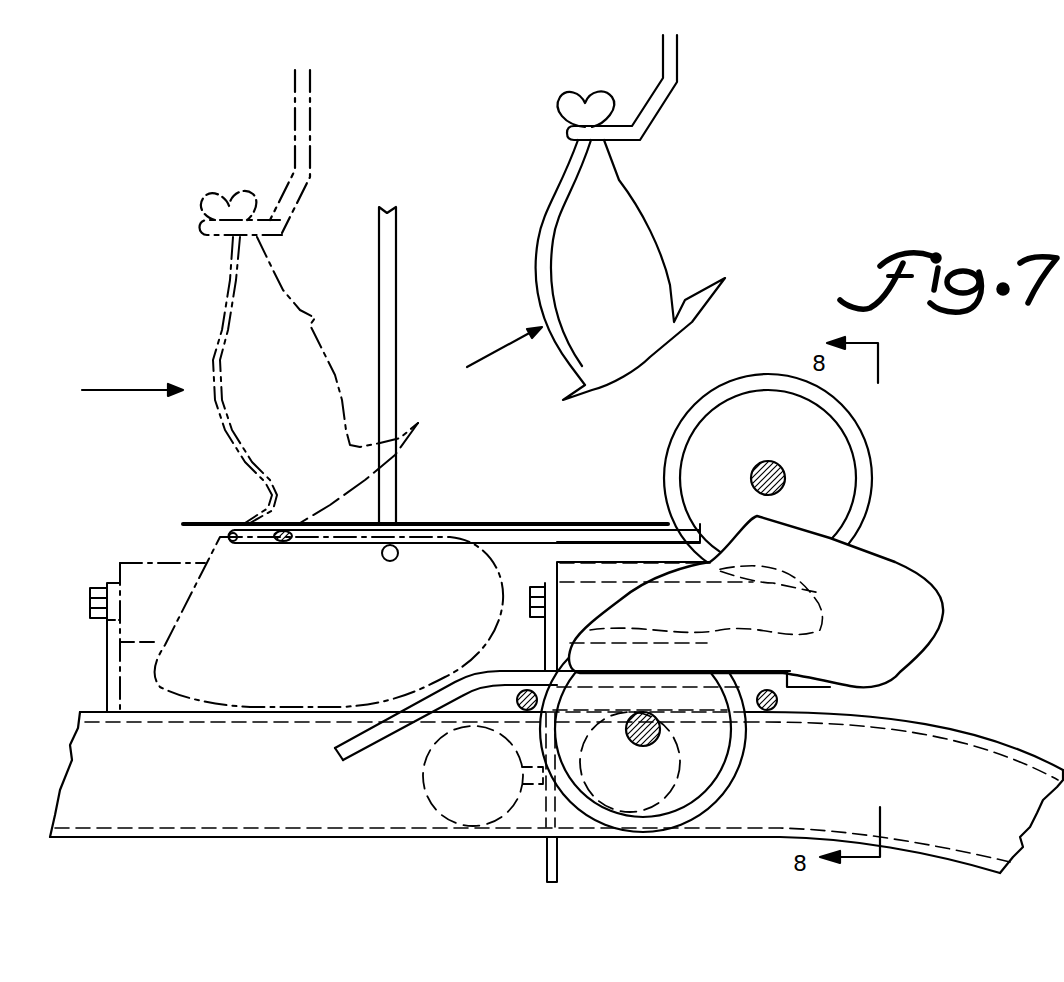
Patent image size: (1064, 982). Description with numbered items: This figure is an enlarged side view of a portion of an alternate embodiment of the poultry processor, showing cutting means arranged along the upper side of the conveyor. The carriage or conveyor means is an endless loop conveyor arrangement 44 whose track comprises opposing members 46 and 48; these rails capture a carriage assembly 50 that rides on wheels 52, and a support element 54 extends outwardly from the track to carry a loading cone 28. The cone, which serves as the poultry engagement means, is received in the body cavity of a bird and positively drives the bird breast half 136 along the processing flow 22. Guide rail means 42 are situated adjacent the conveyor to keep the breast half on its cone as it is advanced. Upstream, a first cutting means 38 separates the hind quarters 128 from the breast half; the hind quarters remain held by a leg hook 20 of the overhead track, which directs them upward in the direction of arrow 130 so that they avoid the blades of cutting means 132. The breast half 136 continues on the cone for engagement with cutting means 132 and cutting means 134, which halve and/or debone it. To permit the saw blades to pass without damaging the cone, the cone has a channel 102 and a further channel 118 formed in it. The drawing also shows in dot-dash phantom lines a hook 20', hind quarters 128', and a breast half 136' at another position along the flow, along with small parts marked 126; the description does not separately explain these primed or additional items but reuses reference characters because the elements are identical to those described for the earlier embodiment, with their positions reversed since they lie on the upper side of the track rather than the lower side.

The leg hooks 20 is at (652, 87).
The container handle tube (alternate position) 20' is at (288, 152).
The processing flow 22 is at (112, 391).
The loading cone 28 is at (168, 610).
The cutting means 38 is at (447, 523).
The guide rail means 42 is at (528, 523).
The endless loop conveyor arrangement 44 is at (980, 733).
The opposing track member 46 is at (987, 743).
The opposing track member 48 is at (945, 840).
The carriage assembly 50 is at (405, 790).
The wheels 52 is at (488, 790).
The support element 54 is at (107, 670).
The channel 102 is at (553, 653).
The channel 118 is at (557, 563).
The fastener 126 is at (382, 556).
The hind quarters 128 is at (632, 270).
The container (alternate position) 128' is at (315, 380).
The arrow 130 is at (470, 368).
The cutting means 132 is at (910, 488).
The cutting means 134 is at (770, 756).
The bird breast half 136 is at (751, 601).
The cam member (alternate position) 136' is at (329, 622).